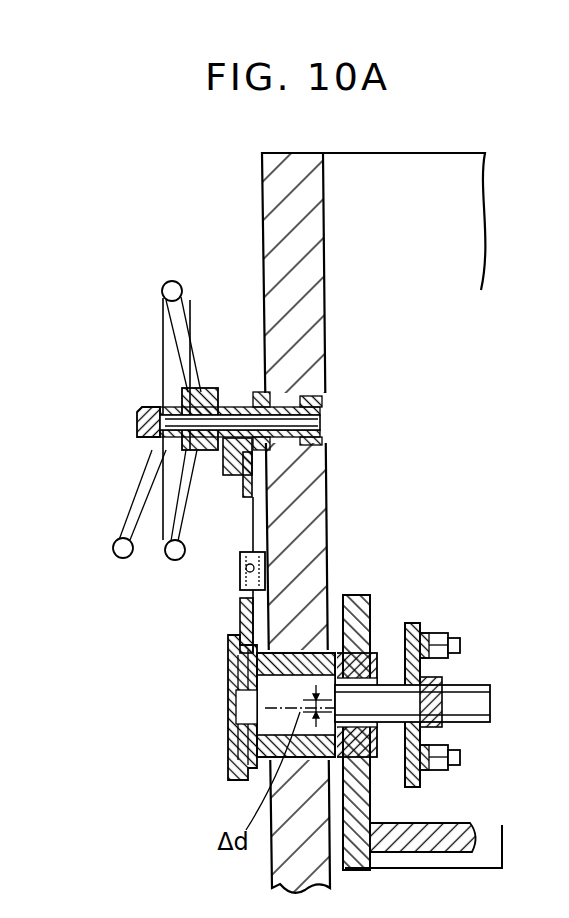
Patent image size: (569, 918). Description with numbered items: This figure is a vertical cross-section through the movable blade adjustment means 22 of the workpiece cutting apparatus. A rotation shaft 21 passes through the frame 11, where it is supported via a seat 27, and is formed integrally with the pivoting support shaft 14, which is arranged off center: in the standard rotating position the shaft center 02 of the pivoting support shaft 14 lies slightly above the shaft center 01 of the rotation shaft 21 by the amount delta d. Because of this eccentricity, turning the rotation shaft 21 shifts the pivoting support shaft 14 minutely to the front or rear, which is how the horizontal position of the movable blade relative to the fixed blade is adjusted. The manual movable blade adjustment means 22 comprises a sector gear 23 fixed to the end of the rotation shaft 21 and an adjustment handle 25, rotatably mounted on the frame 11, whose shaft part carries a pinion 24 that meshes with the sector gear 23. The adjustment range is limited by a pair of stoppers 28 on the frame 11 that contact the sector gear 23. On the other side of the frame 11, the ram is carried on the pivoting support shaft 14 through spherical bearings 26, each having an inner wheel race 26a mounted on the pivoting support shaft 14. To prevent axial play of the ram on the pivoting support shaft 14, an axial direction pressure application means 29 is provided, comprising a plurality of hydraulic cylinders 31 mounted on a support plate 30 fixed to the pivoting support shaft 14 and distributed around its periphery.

The frame 11 is at (262, 226).
The movable blade adjustment means 22 is at (127, 374).
The adjustment handle 25 is at (163, 283).
The pinion 24 is at (236, 395).
The sector gear 23 is at (229, 478).
The stoppers 28 is at (264, 568).
The seat 27 is at (262, 640).
The shaft center of the pivoting support shaft 02 is at (313, 632).
The bearings 26 is at (375, 653).
The inner wheel race 26a is at (392, 772).
The support plate 30 is at (416, 623).
The hydraulic cylinders 31 is at (440, 633).
The axial direction pressure application means 29 is at (466, 760).
The pivoting support shaft 14 is at (468, 690).
The rotation shaft 21 is at (258, 703).
The shaft center of the rotation shaft 01 is at (265, 757).